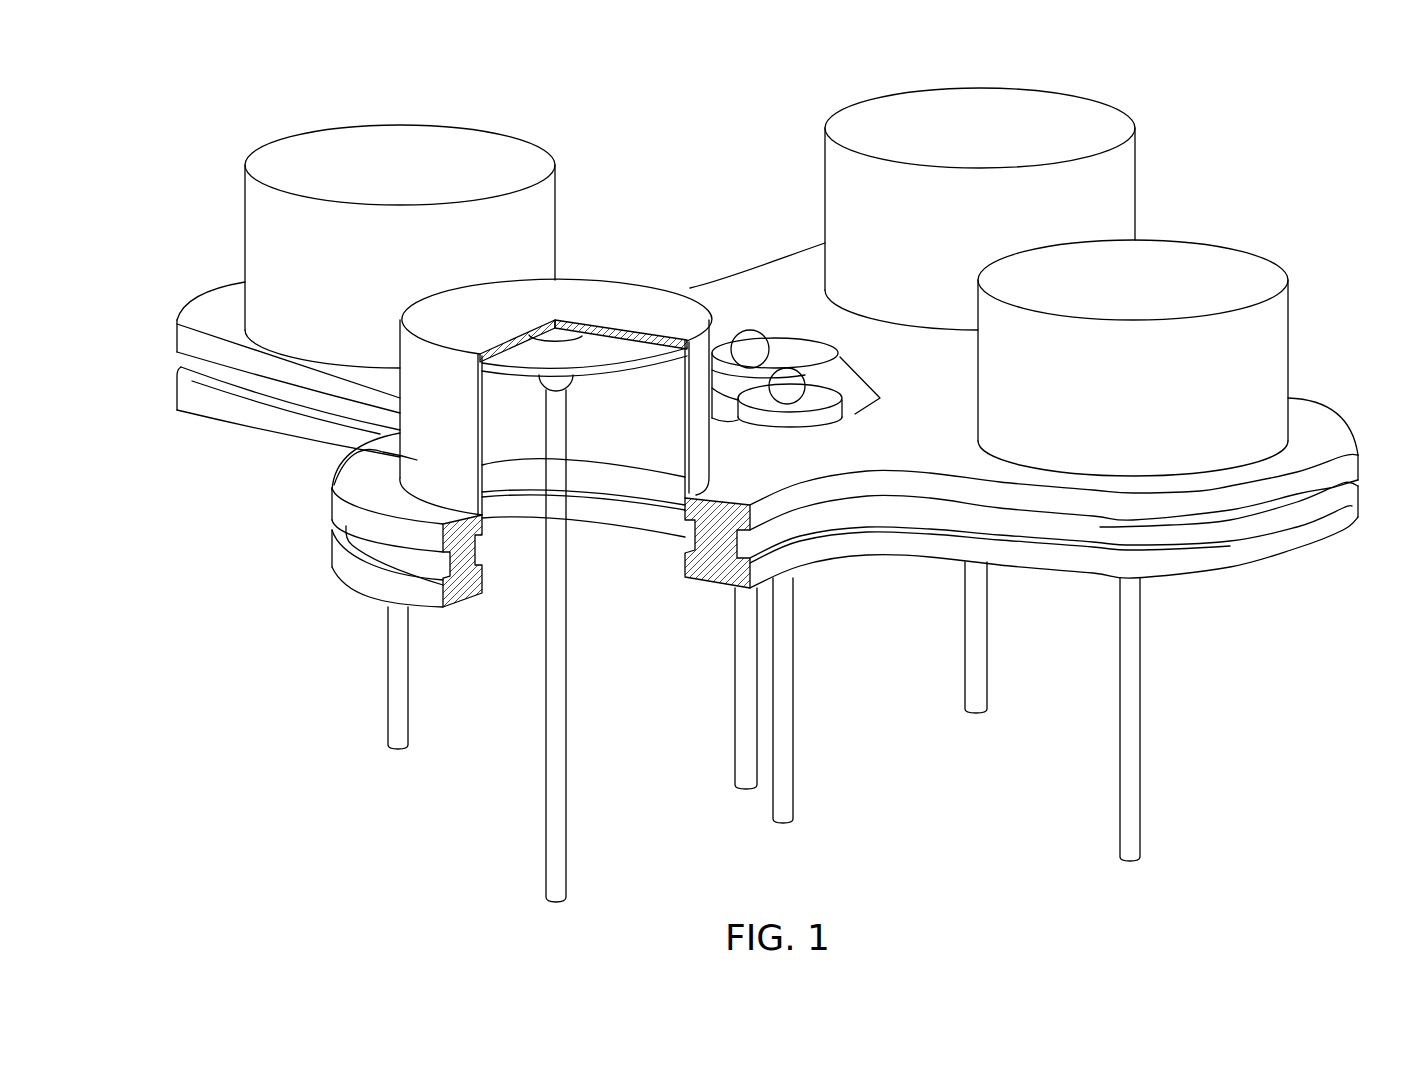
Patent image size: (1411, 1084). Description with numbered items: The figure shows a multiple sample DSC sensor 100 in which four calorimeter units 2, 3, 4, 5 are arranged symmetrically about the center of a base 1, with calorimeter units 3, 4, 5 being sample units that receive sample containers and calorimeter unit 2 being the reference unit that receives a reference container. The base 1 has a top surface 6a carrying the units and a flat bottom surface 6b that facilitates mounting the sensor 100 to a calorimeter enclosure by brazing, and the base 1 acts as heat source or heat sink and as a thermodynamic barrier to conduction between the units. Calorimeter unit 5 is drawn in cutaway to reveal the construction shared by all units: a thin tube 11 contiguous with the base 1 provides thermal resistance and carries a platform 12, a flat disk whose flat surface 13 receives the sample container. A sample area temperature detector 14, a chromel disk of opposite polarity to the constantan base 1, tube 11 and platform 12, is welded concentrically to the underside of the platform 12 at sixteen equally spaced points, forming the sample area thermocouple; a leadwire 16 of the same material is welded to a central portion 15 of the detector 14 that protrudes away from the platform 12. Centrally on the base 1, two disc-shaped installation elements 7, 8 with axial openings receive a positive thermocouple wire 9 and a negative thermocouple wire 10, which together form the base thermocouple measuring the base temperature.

The multiple sample DSC sensor 100 is at (157, 110).
The base 1 is at (1326, 418).
The reference calorimeter unit 2 is at (1197, 258).
The sample calorimeter unit 3 is at (940, 100).
The sample calorimeter unit 4 is at (322, 141).
The sample calorimeter unit 5 is at (605, 283).
The top surface 6a is at (1346, 438).
The bottom surface 6b is at (1267, 574).
The installation element 7 is at (781, 348).
The installation element 8 is at (822, 392).
The positive thermocouple wire 9 is at (736, 712).
The negative thermocouple wire 10 is at (800, 760).
The tube 11 is at (333, 484).
The platform 12 is at (410, 318).
The flat surface 13 is at (493, 296).
The sample area temperature detector 14 is at (522, 373).
The central portion 15 is at (563, 337).
The leadwire 16 is at (545, 797).